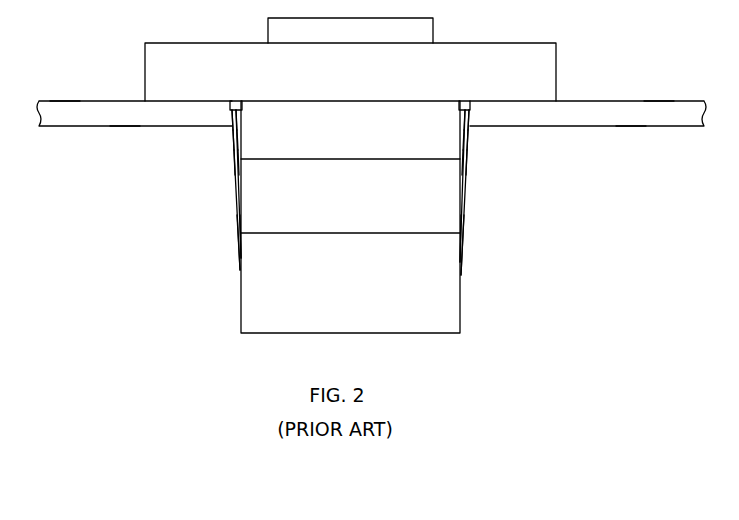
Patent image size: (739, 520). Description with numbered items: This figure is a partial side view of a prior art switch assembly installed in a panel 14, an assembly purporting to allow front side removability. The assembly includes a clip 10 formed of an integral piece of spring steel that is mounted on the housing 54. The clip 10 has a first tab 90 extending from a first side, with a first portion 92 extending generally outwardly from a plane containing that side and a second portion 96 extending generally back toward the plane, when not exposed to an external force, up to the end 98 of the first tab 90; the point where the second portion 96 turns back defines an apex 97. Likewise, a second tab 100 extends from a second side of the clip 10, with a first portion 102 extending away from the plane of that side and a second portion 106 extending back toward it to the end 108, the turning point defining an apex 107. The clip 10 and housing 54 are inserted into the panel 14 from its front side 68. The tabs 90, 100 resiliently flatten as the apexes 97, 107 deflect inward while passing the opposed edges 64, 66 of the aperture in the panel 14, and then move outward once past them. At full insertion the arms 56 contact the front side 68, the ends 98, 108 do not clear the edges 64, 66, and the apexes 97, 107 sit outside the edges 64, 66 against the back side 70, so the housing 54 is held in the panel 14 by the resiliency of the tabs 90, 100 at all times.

The clip 10 is at (375, 245).
The panel 14 is at (71, 112).
The housing 54 is at (241, 300).
The arms 56 is at (145, 63).
The edge of the aperture 64 is at (242, 103).
The edge of the aperture 66 is at (459, 103).
The front side 68 is at (65, 101).
The back side 70 is at (125, 126).
The first tab 90 is at (484, 204).
The first portion of first tab 92 is at (464, 236).
The second portion of first tab 96 is at (468, 143).
The apex of first tab 97 is at (471, 163).
The end of first tab 98 is at (460, 112).
The second tab 100 is at (218, 204).
The first portion of second tab 102 is at (236, 236).
The second portion of second tab 106 is at (232, 143).
The apex of second tab 107 is at (230, 163).
The end of second tab 108 is at (243, 112).